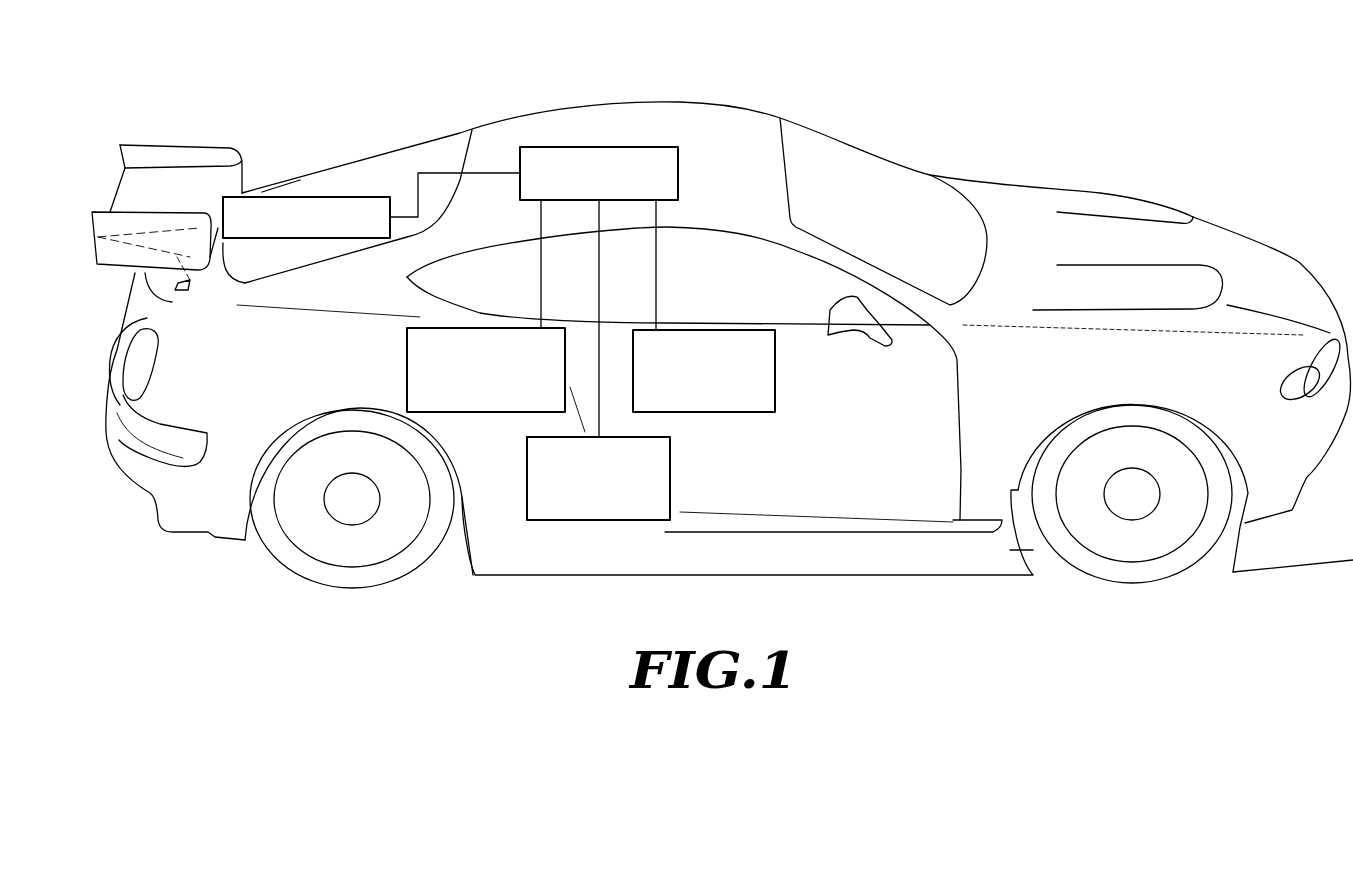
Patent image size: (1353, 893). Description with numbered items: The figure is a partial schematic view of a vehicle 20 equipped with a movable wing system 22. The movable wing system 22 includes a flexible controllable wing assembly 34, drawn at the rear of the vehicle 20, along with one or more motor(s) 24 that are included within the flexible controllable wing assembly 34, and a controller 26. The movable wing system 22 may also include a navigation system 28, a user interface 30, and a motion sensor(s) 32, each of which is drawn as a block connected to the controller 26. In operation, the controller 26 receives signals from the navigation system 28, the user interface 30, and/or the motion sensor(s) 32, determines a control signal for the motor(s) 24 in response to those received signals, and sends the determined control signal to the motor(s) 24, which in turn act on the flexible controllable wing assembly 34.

The vehicle 20 is at (1010, 57).
The movable wing system 22 is at (668, 130).
The motor(s) 24 is at (303, 196).
The controller 26 is at (679, 170).
The navigation system 28 is at (407, 351).
The user interface 30 is at (775, 388).
The motion sensor(s) 32 is at (572, 520).
The flexible controllable wing assembly 34 is at (101, 191).